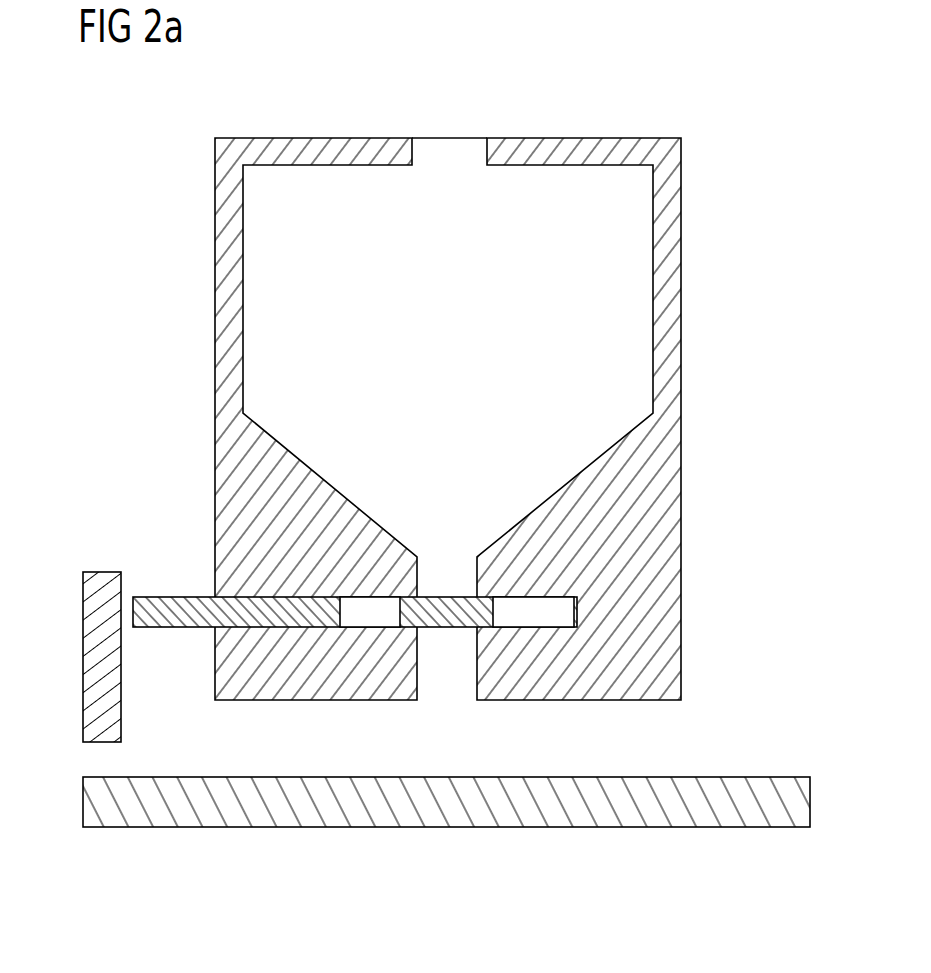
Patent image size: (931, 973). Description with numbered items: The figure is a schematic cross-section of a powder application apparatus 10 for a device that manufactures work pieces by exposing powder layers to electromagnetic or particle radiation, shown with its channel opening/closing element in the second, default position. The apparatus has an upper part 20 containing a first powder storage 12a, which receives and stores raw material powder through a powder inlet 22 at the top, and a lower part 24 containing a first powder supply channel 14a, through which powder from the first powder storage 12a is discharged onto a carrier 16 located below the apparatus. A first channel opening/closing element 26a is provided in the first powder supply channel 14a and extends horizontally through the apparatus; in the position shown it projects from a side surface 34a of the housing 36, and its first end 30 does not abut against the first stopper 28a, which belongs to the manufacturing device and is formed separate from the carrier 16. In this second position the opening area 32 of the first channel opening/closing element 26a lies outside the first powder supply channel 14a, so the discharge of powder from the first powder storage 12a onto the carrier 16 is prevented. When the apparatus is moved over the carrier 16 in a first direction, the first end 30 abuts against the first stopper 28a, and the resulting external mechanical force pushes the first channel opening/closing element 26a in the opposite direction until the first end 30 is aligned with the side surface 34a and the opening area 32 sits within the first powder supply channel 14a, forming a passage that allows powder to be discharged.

The powder application apparatus 10 is at (642, 98).
The first powder storage 12a is at (318, 190).
The first powder supply channel 14a is at (462, 568).
The carrier 16 is at (775, 777).
The upper part 20 is at (702, 165).
The powder inlet 22 is at (460, 152).
The lower part 24 is at (702, 560).
The first channel opening/closing element 26a is at (257, 630).
The first stopper 28a is at (102, 572).
The first end 30 is at (131, 609).
The opening area 32 is at (398, 634).
The side surface 34a is at (214, 378).
The housing 36 is at (216, 170).